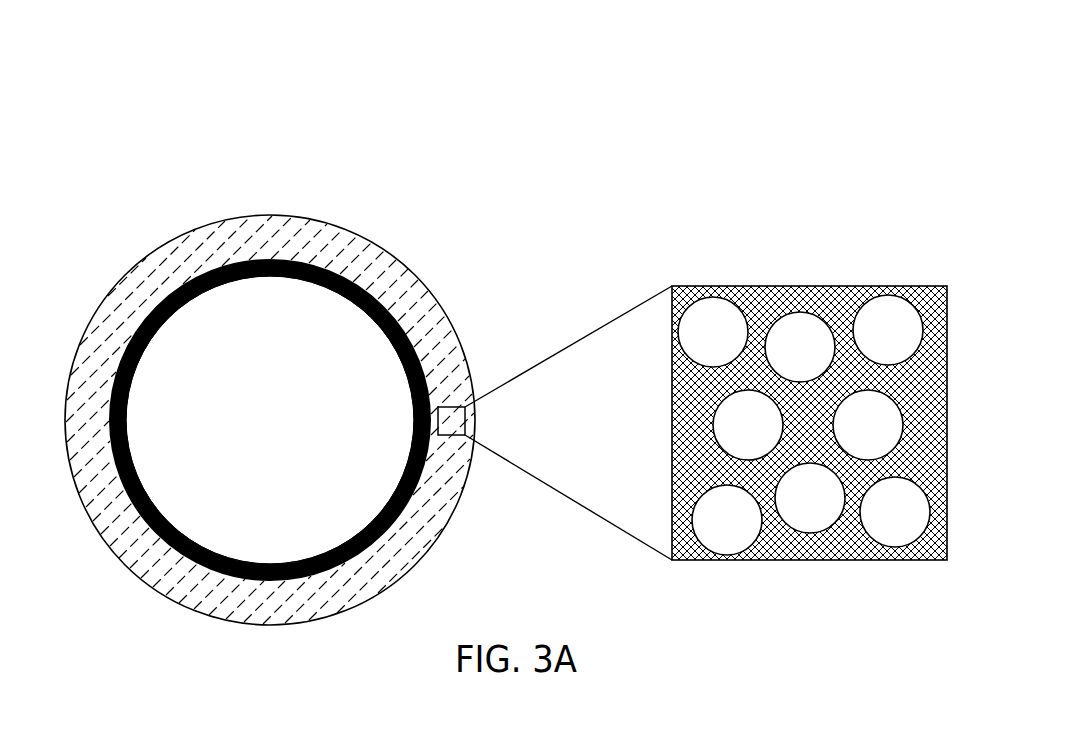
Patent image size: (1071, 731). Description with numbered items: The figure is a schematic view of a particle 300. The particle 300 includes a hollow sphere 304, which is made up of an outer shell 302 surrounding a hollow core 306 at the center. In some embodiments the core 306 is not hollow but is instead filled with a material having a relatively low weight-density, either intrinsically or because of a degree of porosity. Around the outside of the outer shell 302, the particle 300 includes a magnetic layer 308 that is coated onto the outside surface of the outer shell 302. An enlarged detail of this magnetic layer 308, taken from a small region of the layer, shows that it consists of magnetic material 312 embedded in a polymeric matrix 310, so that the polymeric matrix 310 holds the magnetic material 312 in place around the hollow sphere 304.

The particle 300 is at (217, 87).
The outer shell 302 is at (313, 262).
The hollow sphere 304 is at (247, 330).
The hollow core 306 is at (289, 450).
The magnetic layer 308 is at (155, 555).
The polymeric matrix 310 is at (765, 297).
The magnetic material 312 is at (727, 533).